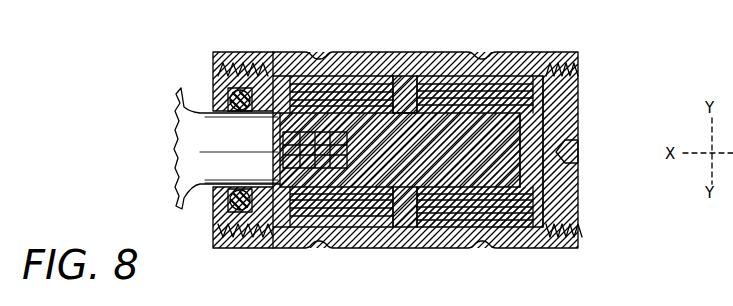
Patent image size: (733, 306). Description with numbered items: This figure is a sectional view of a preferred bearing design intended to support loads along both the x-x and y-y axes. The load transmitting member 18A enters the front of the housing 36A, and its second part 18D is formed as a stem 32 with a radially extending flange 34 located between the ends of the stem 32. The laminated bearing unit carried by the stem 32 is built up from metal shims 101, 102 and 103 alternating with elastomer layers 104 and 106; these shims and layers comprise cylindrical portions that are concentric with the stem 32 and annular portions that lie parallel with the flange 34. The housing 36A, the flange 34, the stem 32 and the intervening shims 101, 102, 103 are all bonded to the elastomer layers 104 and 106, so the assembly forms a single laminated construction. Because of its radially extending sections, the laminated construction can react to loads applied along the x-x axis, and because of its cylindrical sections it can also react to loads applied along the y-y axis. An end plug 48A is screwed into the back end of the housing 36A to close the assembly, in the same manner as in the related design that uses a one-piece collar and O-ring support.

The load transmitting member 18A is at (192, 107).
The housing 36A is at (348, 53).
The flange 34 is at (412, 57).
The elastomer layer 104 is at (507, 88).
The metal shim 101 is at (508, 94).
The second part of the load transmitting member 18D is at (527, 129).
The end plug 48A is at (582, 170).
The stem 32 is at (513, 173).
The elastomer layer 106 is at (478, 200).
The metal shim 102 is at (482, 214).
The metal shim 103 is at (512, 226).